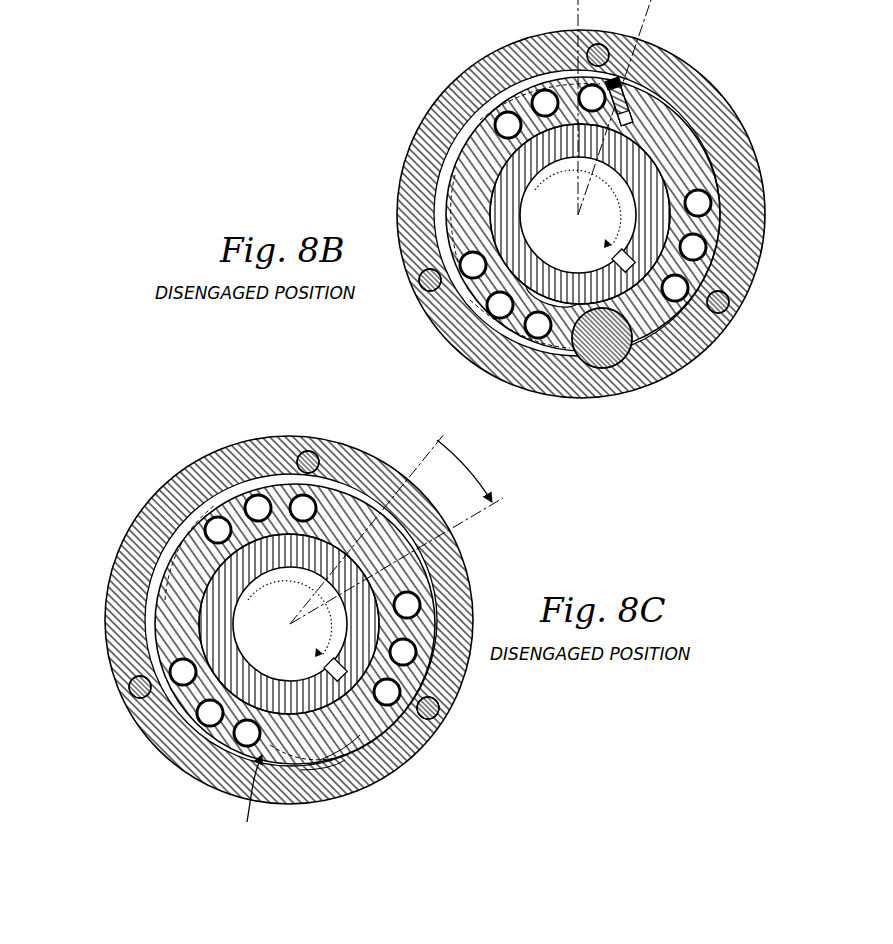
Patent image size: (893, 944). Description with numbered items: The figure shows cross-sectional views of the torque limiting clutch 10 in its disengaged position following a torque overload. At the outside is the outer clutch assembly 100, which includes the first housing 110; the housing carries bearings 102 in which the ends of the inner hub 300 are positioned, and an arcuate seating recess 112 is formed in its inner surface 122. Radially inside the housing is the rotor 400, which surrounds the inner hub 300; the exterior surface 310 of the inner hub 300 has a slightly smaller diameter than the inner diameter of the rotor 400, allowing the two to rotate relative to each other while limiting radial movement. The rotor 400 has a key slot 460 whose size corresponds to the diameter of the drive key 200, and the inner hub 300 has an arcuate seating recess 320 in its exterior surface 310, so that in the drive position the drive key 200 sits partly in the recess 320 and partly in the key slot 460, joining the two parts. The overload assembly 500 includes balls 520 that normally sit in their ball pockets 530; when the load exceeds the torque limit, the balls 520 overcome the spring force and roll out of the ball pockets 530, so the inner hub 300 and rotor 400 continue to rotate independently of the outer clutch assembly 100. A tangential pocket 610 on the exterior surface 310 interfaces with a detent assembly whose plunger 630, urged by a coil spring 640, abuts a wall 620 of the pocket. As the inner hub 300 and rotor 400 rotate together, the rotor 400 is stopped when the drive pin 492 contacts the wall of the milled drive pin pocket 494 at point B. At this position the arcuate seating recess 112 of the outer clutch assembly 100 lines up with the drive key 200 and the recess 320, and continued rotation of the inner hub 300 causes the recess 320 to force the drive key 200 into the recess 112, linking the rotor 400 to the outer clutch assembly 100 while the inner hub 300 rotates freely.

In FIG. 8B, the torque limiting clutch 10 is at (382, 131).
In FIG. 8C, the torque limiting clutch 10 is at (132, 457).
In FIG. 8B, the outer clutch assembly 100 is at (430, 85).
In FIG. 8C, the outer clutch assembly 100 is at (94, 577).
In FIG. 8B, the bearings 102 is at (258, 0).
In FIG. 8B, the first housing 110 is at (487, 63).
In FIG. 8C, the first housing 110 is at (160, 520).
In FIG. 8B, the arcuate seating recess 112 is at (578, 375).
In FIG. 8C, the arcuate seating recess 112 is at (333, 768).
In FIG. 8B, the inner surface 122 is at (514, 95).
In FIG. 8B, the drive key 200 is at (622, 372).
In FIG. 8C, the drive key 200 is at (351, 573).
In FIG. 8B, the inner hub 300 is at (440, 213).
In FIG. 8B, the exterior surface 310 is at (510, 98).
In FIG. 8B, the arcuate seating recess 320 is at (552, 345).
In FIG. 8B, the rotor 400 is at (712, 232).
In FIG. 8C, the rotor 400 is at (380, 730).
In FIG. 8B, the key slot 460 is at (660, 360).
In FIG. 8C, the drive pin 492 is at (308, 778).
In FIG. 8C, the drive pin pocket 494 is at (335, 765).
In FIG. 8B, the overload assembly 500 is at (712, 203).
In FIG. 8C, the balls 520 is at (262, 496).
In FIG. 8C, the ball pockets 530 is at (190, 520).
In FIG. 8B, the tangential pocket 610 is at (668, 108).
In FIG. 8B, the wall 620 is at (625, 118).
In FIG. 8B, the plunger 630 is at (613, 83).
In FIG. 8B, the coil spring 640 is at (620, 82).